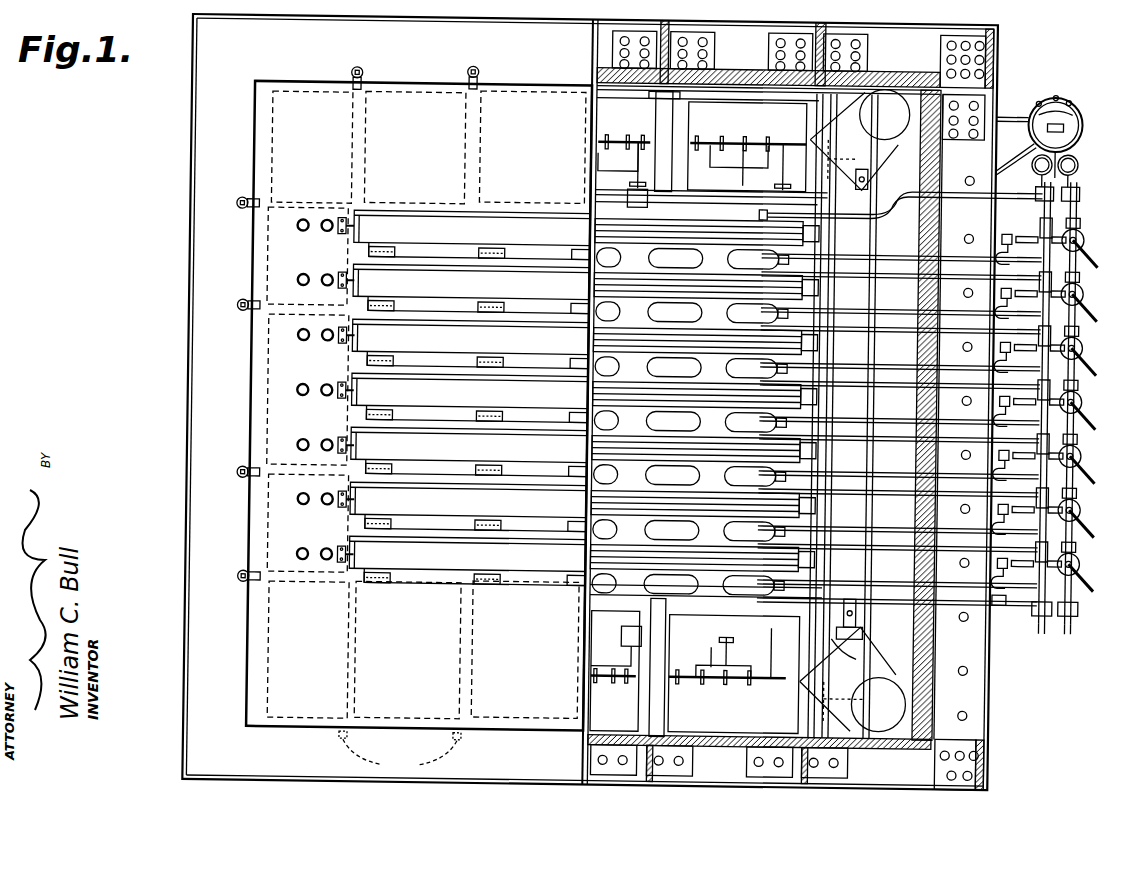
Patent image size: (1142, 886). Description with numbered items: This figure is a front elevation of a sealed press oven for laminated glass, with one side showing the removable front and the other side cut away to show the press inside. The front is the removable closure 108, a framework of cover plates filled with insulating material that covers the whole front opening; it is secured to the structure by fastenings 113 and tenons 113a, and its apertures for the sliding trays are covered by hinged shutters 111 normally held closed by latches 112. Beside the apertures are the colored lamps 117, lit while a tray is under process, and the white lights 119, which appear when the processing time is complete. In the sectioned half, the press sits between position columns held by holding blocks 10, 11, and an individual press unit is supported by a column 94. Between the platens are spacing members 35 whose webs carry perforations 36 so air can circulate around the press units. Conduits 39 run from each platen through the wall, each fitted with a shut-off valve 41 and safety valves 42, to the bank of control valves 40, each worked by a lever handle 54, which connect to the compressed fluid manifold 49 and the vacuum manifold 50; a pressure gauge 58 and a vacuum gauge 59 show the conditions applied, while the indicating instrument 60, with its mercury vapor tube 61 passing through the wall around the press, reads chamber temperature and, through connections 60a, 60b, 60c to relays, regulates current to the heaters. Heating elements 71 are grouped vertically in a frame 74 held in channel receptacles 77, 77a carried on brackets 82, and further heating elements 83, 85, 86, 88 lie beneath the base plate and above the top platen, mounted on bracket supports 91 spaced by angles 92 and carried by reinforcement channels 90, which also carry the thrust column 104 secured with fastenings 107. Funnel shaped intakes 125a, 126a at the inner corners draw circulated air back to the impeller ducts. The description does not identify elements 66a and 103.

The holding block 10 is at (815, 728).
The holding block 11 is at (747, 146).
The spacing member 35 is at (602, 252).
The perforation 36 is at (600, 257).
The conduit 39 is at (890, 302).
The control valve 40 is at (1076, 282).
The shut-off valve 41 is at (987, 292).
The safety valve 42 is at (1033, 214).
The compressed fluid manifold 49 is at (1003, 608).
The vacuum manifold 50 is at (1078, 592).
The lever handle 54 is at (1078, 392).
The pressure gauge 58 is at (1036, 158).
The vacuum gauge 59 is at (1076, 150).
The indicating instrument 60 is at (1076, 100).
The connection 60a is at (1040, 88).
The connection 60b is at (1058, 84).
The connection 60c is at (1071, 90).
The mercury vapor tube 61 is at (698, 248).
The pin 66a is at (736, 636).
The electric heating element 71 is at (860, 338).
The frame 74 is at (866, 612).
The channel receptacle 77 is at (872, 624).
The channel receptacle 77a is at (880, 172).
The bracket 82 is at (865, 649).
The heating element 83 is at (738, 678).
The heating element 85 is at (600, 673).
The heating element 86 is at (740, 130).
The heating element 88 is at (605, 130).
The reinforcement channel 90 is at (630, 633).
The bracket support 91 is at (640, 170).
The angle 92 is at (775, 190).
The column 94 is at (667, 698).
The cross member 103 is at (812, 118).
The thrust column 104 is at (660, 125).
The fastening 107 is at (708, 106).
The removable closure 108 is at (419, 406).
The hinged shutter 111 is at (469, 397).
The latch 112 is at (346, 218).
The fastening 113 is at (470, 66).
The tenon 113a is at (400, 748).
The colored lamp 117 is at (305, 229).
The white light 119 is at (330, 216).
The funnel shaped intake 125a is at (860, 140).
The funnel shaped intake 126a is at (852, 679).